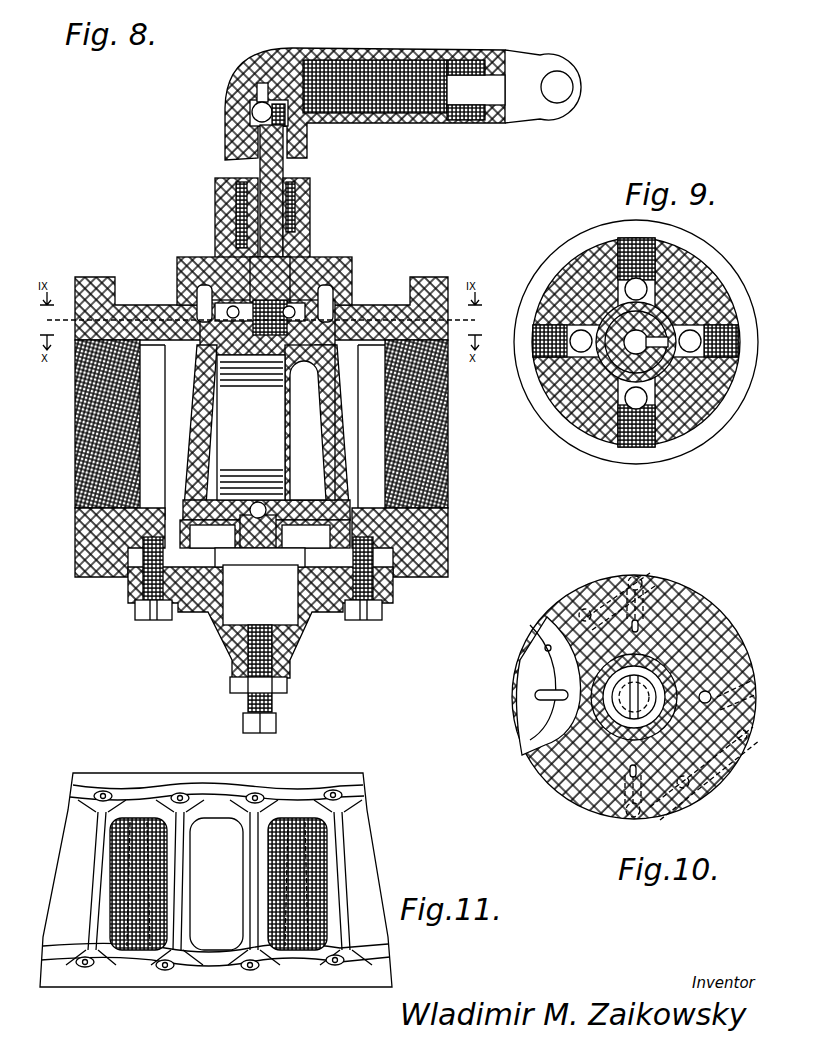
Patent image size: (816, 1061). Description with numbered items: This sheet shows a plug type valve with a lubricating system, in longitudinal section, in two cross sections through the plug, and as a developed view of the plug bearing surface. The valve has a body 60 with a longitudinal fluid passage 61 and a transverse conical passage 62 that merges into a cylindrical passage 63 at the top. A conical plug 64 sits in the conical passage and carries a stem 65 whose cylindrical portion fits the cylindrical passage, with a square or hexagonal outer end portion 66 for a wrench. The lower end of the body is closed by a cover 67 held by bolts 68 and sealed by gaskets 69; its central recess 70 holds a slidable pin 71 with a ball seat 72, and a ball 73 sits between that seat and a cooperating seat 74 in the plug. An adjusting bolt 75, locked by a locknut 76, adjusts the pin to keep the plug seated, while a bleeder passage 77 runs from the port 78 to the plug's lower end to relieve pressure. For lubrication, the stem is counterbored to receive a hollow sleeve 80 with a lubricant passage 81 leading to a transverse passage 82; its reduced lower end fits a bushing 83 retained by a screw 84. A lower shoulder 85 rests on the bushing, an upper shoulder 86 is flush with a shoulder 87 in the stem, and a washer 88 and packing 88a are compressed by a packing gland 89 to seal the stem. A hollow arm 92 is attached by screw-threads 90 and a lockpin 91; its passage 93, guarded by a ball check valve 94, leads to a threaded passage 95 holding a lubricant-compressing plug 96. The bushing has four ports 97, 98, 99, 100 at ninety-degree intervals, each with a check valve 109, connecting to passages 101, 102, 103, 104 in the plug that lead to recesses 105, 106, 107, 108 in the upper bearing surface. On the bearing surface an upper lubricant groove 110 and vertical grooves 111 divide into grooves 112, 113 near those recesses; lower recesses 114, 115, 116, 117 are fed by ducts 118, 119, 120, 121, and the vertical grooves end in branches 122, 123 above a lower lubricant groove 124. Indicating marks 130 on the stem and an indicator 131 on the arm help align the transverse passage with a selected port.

In FIG. 8, the body 60 is at (178, 262).
In FIG. 8, the longitudinal fluid passage 61 is at (175, 432).
In FIG. 8, the transverse conical passage 62 is at (177, 541).
In FIG. 8, the cylindrical passage 63 is at (205, 278).
In FIG. 9, the cylindrical passage 63 is at (672, 250).
In FIG. 8, the conical plug 64 is at (332, 441).
In FIG. 9, the conical plug 64 is at (631, 214).
In FIG. 10, the conical plug 64 is at (720, 601).
In FIG. 11, the conical plug 64 is at (369, 796).
In FIG. 8, the stem 65 is at (300, 231).
In FIG. 8, the outer end portion 66 is at (311, 189).
In FIG. 8, the closure member or cover 67 is at (300, 636).
In FIG. 8, the bolts 68 is at (136, 607).
In FIG. 8, the gaskets 69 is at (122, 577).
In FIG. 8, the cylindrical central recess 70 is at (212, 630).
In FIG. 8, the pin 71 is at (237, 610).
In FIG. 8, the ball seat 72 is at (262, 527).
In FIG. 8, the ball 73 is at (270, 505).
In FIG. 8, the cooperating seat 74 is at (242, 498).
In FIG. 8, the adjusting bolt 75 is at (272, 672).
In FIG. 8, the locknut 76 is at (232, 686).
In FIG. 8, the bleeder passage 77 is at (340, 483).
In FIG. 8, the port 78 is at (304, 386).
In FIG. 10, the port 78 is at (726, 782).
In FIG. 11, the port 78 is at (75, 867).
In FIG. 8, the rotatable shaft or hollow sleeve 80 is at (287, 246).
In FIG. 9, the rotatable shaft or hollow sleeve 80 is at (618, 312).
In FIG. 8, the lubricant passage 81 is at (260, 165).
In FIG. 9, the lubricant passage 81 is at (602, 300).
In FIG. 8, the transverse passage 82 is at (290, 302).
In FIG. 9, the transverse passage 82 is at (672, 372).
In FIG. 8, the bushing 83 is at (200, 297).
In FIG. 9, the bushing 83 is at (703, 322).
In FIG. 10, the bushing 83 is at (678, 668).
In FIG. 8, the screw 84 is at (265, 380).
In FIG. 10, the screw 84 is at (620, 708).
In FIG. 8, the lower shoulder 85 is at (230, 258).
In FIG. 8, the upper shoulder 86 is at (297, 218).
In FIG. 8, the shoulder 87 is at (218, 228).
In FIG. 8, the washer 88 is at (236, 205).
In FIG. 8, the packing 88a is at (296, 208).
In FIG. 8, the packing gland 89 is at (232, 182).
In FIG. 8, the screw-threads 90 is at (285, 125).
In FIG. 8, the lockpin 91 is at (226, 135).
In FIG. 8, the radially extending hollow arm 92 is at (455, 112).
In FIG. 8, the passage 93 is at (262, 83).
In FIG. 8, the ball check valve 94 is at (243, 95).
In FIG. 8, the threaded passage 95 is at (338, 64).
In FIG. 8, the lubricant-compressing plug 96 is at (497, 72).
In FIG. 9, the port 97 is at (672, 315).
In FIG. 9, the port 98 is at (688, 365).
In FIG. 9, the port 99 is at (678, 365).
In FIG. 9, the port 100 is at (600, 338).
In FIG. 9, the passage 101 is at (700, 265).
In FIG. 10, the passage 101 is at (690, 590).
In FIG. 11, the passage 101 is at (112, 787).
In FIG. 8, the passage 102 is at (293, 330).
In FIG. 9, the passage 102 is at (688, 352).
In FIG. 10, the passage 102 is at (690, 692).
In FIG. 11, the passage 102 is at (325, 790).
In FIG. 9, the passage 103 is at (650, 413).
In FIG. 10, the passage 103 is at (628, 790).
In FIG. 11, the passage 103 is at (275, 792).
In FIG. 8, the passage 104 is at (225, 392).
In FIG. 9, the passage 104 is at (590, 315).
In FIG. 10, the passage 104 is at (530, 728).
In FIG. 11, the passage 104 is at (175, 793).
In FIG. 10, the recess 105 is at (648, 578).
In FIG. 11, the recess 105 is at (100, 790).
In FIG. 8, the recess 106 is at (344, 343).
In FIG. 10, the recess 106 is at (755, 692).
In FIG. 11, the recess 106 is at (340, 793).
In FIG. 10, the recess 107 is at (610, 823).
In FIG. 11, the recess 107 is at (255, 792).
In FIG. 8, the recess 108 is at (205, 330).
In FIG. 10, the recess 108 is at (520, 707).
In FIG. 11, the recess 108 is at (193, 798).
In FIG. 9, the check valves 109 is at (590, 328).
In FIG. 8, the upper lubricant groove 110 is at (395, 290).
In FIG. 11, the upper lubricant groove 110 is at (322, 790).
In FIG. 11, the vertically extending grooves 111 is at (182, 872).
In FIG. 11, the groove 112 is at (88, 805).
In FIG. 11, the groove 113 is at (205, 820).
In FIG. 11, the recess 114 is at (85, 966).
In FIG. 8, the recess 115 is at (190, 496).
In FIG. 11, the recess 115 is at (170, 969).
In FIG. 11, the recess 116 is at (252, 969).
In FIG. 8, the recess 117 is at (343, 501).
In FIG. 11, the recess 117 is at (340, 965).
In FIG. 10, the duct 118 is at (598, 598).
In FIG. 11, the duct 118 is at (130, 892).
In FIG. 8, the duct 119 is at (213, 370).
In FIG. 10, the duct 119 is at (545, 655).
In FIG. 11, the duct 119 is at (160, 915).
In FIG. 10, the duct 120 is at (688, 813).
In FIG. 11, the duct 120 is at (283, 893).
In FIG. 10, the duct 121 is at (730, 742).
In FIG. 11, the duct 121 is at (310, 903).
In FIG. 11, the branch 122 is at (80, 955).
In FIG. 11, the branch 123 is at (346, 948).
In FIG. 8, the lower lubricant groove 124 is at (345, 522).
In FIG. 11, the lower lubricant groove 124 is at (165, 968).
In FIG. 8, the indicating marks 130 is at (218, 170).
In FIG. 8, the indicator 131 is at (309, 150).